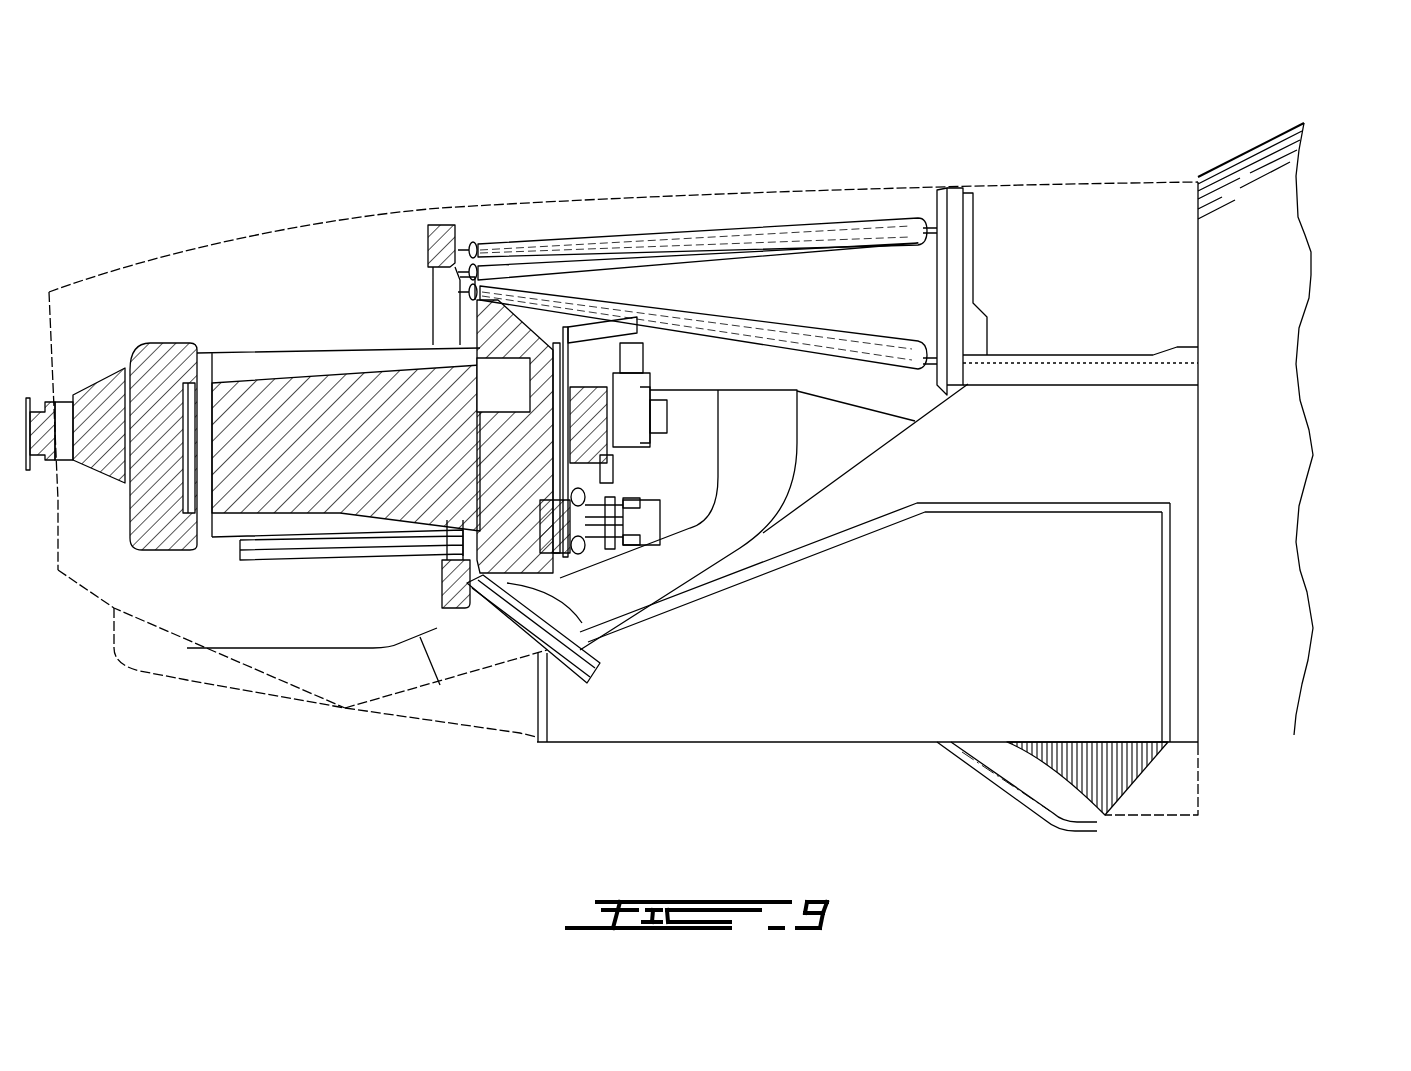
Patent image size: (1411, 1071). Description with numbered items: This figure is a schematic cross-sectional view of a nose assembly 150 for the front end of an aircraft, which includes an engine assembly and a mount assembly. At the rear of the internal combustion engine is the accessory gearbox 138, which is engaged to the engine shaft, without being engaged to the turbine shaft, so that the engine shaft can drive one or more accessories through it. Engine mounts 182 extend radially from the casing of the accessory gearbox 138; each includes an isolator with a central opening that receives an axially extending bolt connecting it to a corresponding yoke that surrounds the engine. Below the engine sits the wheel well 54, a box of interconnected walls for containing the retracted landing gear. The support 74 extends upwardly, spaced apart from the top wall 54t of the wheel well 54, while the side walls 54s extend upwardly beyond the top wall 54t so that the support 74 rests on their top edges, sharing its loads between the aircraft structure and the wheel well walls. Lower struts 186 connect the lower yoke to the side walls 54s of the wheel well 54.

The nose assembly 150 is at (255, 185).
The engine mount 182 is at (499, 333).
The accessory gearbox 138 is at (543, 440).
The support 74 is at (957, 203).
The wheel well 54 is at (713, 705).
The top wall 54t is at (1077, 503).
The side wall 54s is at (960, 707).
The lower strut 186 is at (517, 637).